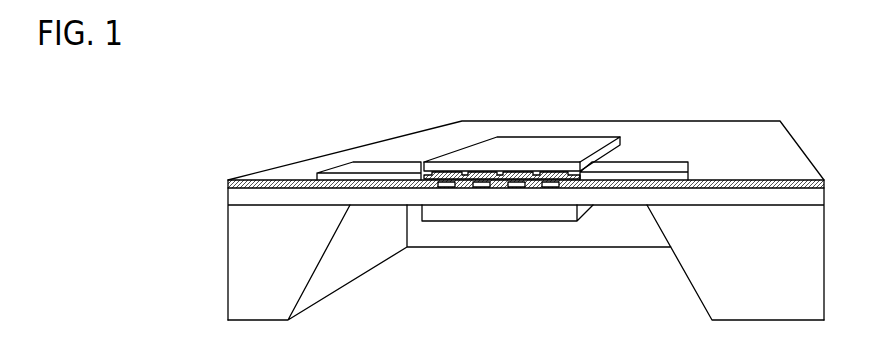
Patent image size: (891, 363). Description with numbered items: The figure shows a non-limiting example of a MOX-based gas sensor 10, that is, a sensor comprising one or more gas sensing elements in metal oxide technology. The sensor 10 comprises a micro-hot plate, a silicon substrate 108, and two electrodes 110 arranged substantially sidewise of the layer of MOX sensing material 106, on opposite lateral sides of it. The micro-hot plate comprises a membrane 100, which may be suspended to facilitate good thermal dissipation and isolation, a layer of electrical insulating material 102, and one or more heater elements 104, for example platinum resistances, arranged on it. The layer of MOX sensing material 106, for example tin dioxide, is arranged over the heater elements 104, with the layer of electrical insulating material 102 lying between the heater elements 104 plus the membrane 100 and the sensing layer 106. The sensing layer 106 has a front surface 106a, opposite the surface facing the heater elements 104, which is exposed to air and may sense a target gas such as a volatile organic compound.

The MOX-based gas sensor 10 is at (367, 104).
The membrane 100 is at (617, 196).
The layer of electrical insulating material 102 is at (293, 190).
The heater elements 104 is at (482, 188).
The layer of MOX sensing material 106 is at (522, 109).
The front surface 106a is at (494, 146).
The silicon substrate 108 is at (492, 212).
The electrodes 110 is at (355, 163).